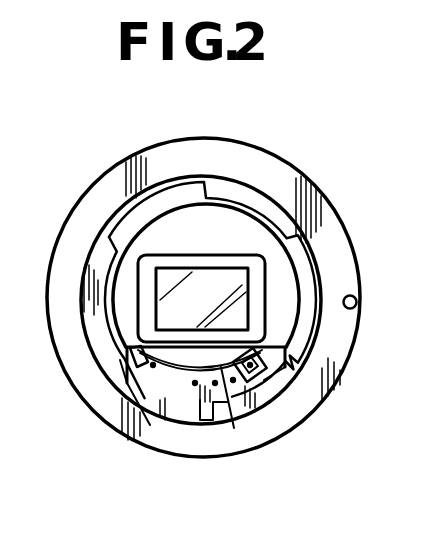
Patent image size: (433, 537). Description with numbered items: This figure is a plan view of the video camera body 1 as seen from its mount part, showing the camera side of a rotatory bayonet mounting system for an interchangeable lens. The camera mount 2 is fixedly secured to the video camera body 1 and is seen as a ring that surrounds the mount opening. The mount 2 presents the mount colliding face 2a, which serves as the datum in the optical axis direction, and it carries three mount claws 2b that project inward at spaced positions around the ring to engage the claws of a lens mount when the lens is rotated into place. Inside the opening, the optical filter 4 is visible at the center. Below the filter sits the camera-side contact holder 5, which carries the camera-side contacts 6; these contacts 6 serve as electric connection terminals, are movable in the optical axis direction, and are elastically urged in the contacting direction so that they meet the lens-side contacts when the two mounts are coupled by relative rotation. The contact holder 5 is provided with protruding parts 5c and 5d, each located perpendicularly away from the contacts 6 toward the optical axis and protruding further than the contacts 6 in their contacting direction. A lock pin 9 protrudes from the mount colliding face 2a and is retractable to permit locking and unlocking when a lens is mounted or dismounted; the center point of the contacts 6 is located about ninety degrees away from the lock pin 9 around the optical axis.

The video camera body 1 is at (98, 185).
The camera mount 2 is at (310, 388).
The mount colliding face 2a is at (179, 158).
The mount claws 2b is at (290, 212).
The optical filter 4 is at (205, 285).
The camera-side contact holder 5 is at (167, 396).
The protruding part 5c is at (241, 405).
The protruding part 5d is at (113, 403).
The camera-side contacts 6 is at (193, 386).
The lock pin 9 is at (357, 303).